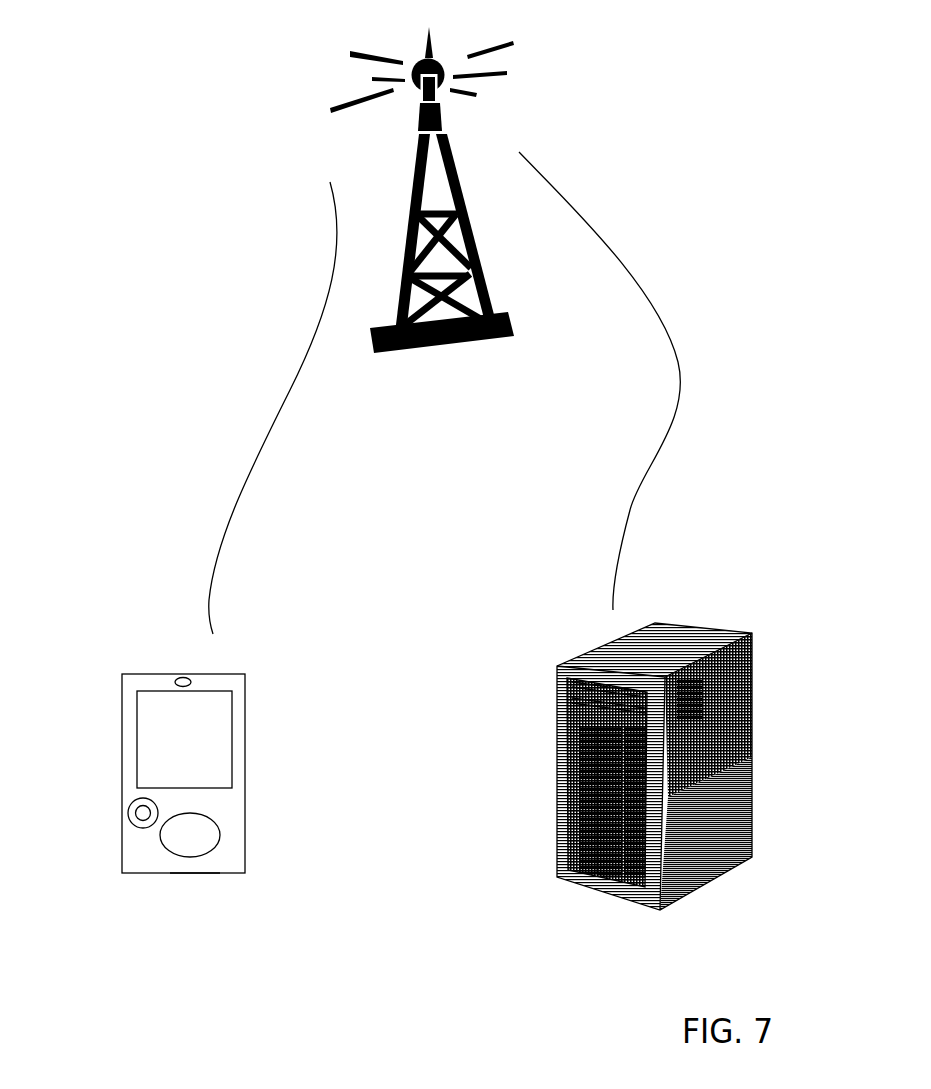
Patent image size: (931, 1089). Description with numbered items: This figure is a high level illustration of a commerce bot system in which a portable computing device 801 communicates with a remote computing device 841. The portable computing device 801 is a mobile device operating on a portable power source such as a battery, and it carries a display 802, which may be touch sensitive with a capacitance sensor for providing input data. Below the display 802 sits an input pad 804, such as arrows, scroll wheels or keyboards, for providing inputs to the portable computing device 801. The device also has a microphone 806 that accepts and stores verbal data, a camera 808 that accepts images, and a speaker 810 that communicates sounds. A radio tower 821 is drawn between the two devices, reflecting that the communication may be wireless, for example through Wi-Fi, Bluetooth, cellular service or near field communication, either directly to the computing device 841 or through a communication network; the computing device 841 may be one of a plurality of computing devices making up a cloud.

The cellular base station / radio tower 821 is at (330, 58).
The portable computing device 801 is at (152, 673).
The display 802 is at (232, 787).
The input pad 804 is at (207, 852).
The microphone 806 is at (197, 875).
The camera 808 is at (192, 682).
The speaker 810 is at (140, 818).
The computing device 841 is at (675, 642).